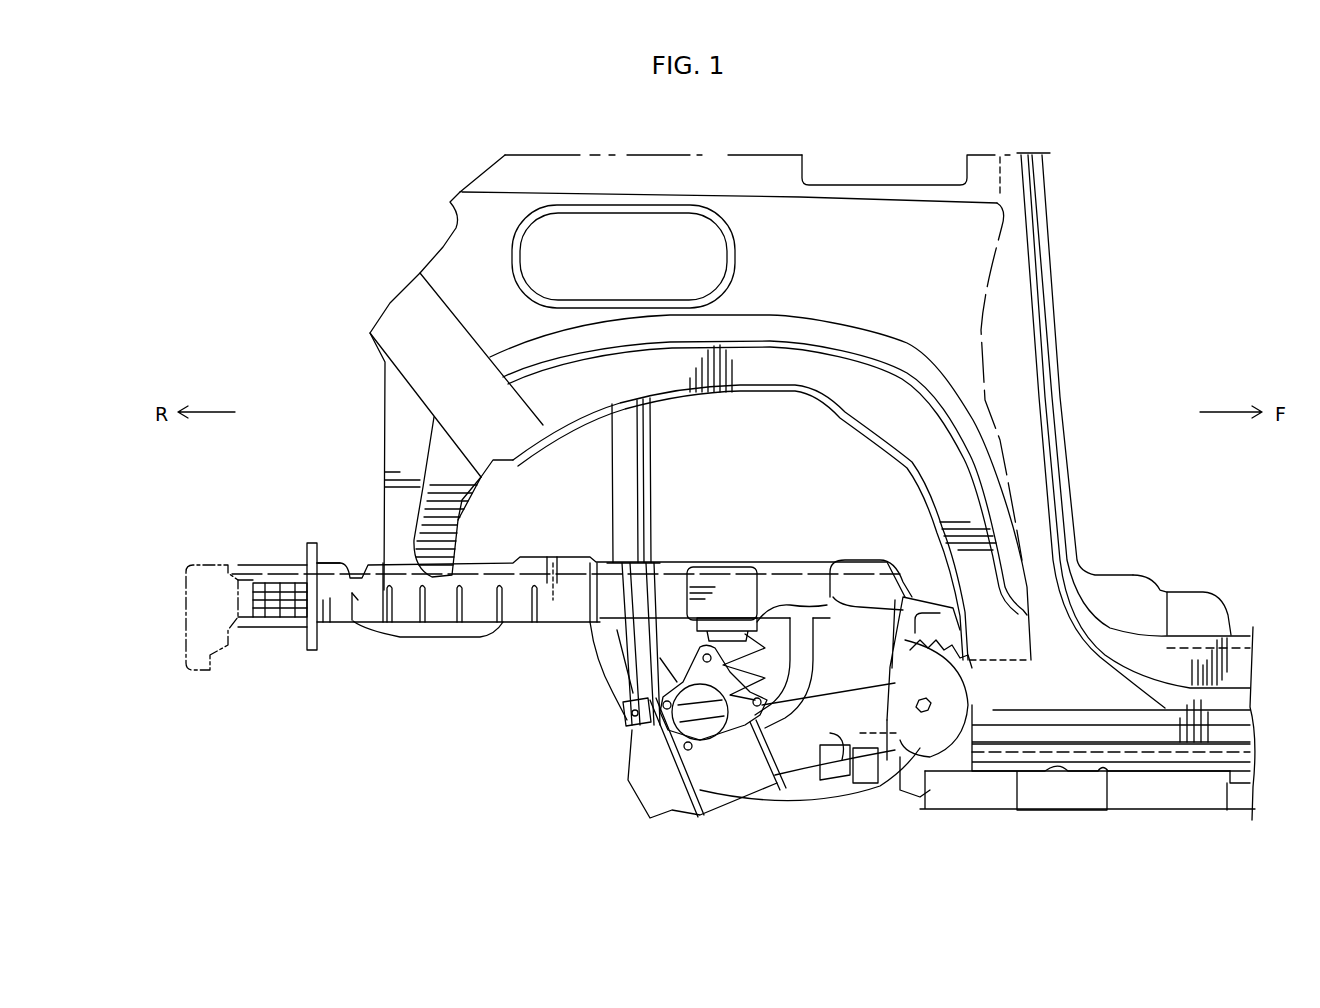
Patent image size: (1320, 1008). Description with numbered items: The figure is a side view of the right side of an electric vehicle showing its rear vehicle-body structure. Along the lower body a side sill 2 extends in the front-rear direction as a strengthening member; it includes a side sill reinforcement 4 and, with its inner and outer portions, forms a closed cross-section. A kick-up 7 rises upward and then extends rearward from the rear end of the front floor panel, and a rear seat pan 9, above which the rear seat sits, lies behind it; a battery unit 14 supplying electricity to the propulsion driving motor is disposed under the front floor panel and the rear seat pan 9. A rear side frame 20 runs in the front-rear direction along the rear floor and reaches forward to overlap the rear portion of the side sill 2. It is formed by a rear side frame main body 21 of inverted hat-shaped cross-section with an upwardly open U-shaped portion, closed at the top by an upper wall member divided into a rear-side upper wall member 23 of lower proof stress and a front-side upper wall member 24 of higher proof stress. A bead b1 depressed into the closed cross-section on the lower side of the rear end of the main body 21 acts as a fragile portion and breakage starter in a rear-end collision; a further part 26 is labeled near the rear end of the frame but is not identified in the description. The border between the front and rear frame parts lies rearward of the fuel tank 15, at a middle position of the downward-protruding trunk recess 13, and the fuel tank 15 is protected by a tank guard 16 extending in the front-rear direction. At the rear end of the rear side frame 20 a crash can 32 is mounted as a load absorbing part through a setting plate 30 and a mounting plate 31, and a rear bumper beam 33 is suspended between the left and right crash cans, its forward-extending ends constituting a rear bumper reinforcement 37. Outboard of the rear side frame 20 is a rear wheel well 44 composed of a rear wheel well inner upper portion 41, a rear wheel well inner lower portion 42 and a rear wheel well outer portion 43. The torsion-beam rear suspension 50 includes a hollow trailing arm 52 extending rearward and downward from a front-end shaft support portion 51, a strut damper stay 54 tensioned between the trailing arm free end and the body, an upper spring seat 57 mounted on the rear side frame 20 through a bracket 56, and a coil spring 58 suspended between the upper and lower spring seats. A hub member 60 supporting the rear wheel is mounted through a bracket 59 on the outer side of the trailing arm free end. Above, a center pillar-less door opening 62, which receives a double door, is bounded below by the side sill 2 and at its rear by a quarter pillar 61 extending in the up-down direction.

The side sill 2 is at (1058, 788).
The side sill reinforcement 4 is at (1175, 765).
The kick-up 7 is at (1197, 591).
The rear seat pan 9 is at (1110, 575).
The trunk recess 13 is at (420, 640).
The battery unit 14 is at (1120, 809).
The fuel tank 15 is at (812, 677).
The tank guard 16 is at (830, 810).
The rear side frame 20 is at (557, 546).
The rear side frame main body 21 is at (512, 613).
The rear-side upper wall member 23 is at (362, 562).
The front-side upper wall member 24 is at (480, 555).
The rear end bracket 26 is at (333, 560).
The setting plate 30 is at (318, 635).
The mounting plate 31 is at (310, 627).
The crash can 32 is at (272, 562).
The rear bumper beam 33 is at (186, 620).
The rear bumper reinforcement 37 is at (221, 537).
The rear wheel well inner upper portion 41 is at (727, 471).
The rear wheel well inner lower portion 42 is at (940, 617).
The rear wheel well outer portion 43 is at (767, 394).
The rear wheel well 44 is at (408, 462).
The torsion-beam rear suspension 50 is at (735, 810).
The front-end shaft support portion 51 is at (936, 720).
The trailing arm 52 is at (858, 755).
The strut damper stay 54 is at (620, 465).
The bracket 56 is at (703, 562).
The upper spring seat 57 is at (723, 625).
The coil spring 58 is at (748, 669).
The bracket 59 is at (635, 812).
The hub member 60 is at (755, 748).
The quarter pillar 61 is at (1072, 372).
The center pillar-less door opening 62 is at (1047, 184).
The bead b1 is at (357, 603).